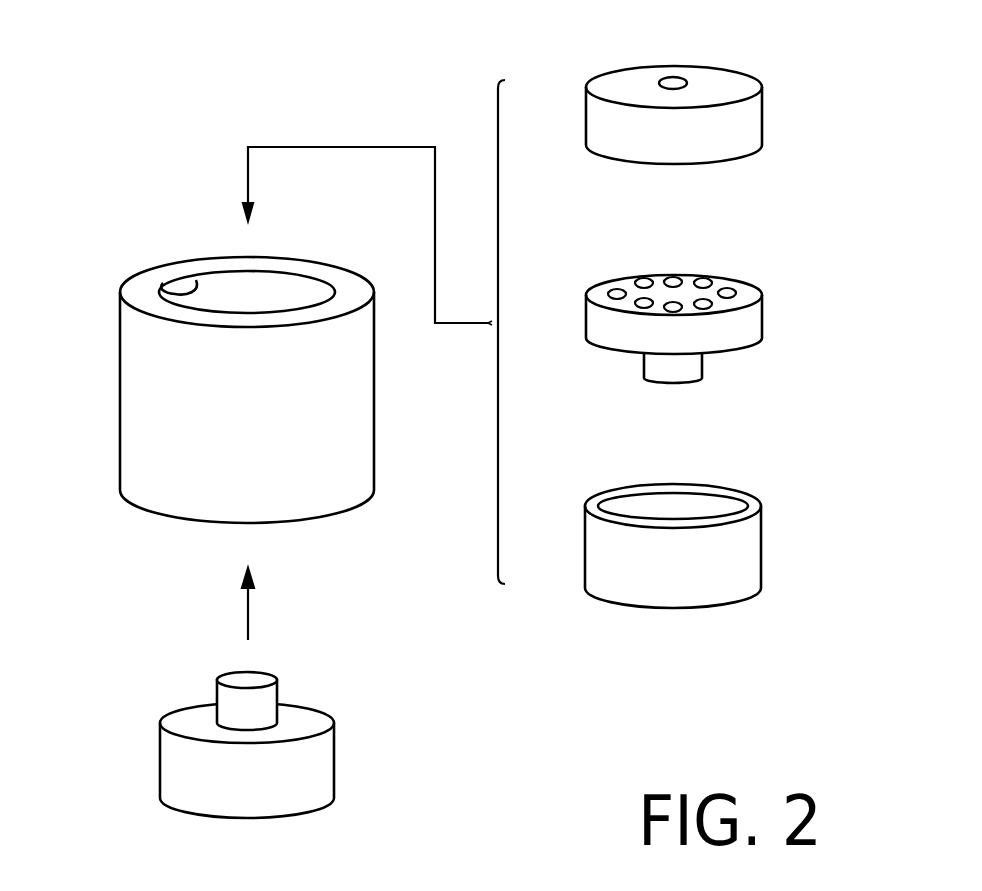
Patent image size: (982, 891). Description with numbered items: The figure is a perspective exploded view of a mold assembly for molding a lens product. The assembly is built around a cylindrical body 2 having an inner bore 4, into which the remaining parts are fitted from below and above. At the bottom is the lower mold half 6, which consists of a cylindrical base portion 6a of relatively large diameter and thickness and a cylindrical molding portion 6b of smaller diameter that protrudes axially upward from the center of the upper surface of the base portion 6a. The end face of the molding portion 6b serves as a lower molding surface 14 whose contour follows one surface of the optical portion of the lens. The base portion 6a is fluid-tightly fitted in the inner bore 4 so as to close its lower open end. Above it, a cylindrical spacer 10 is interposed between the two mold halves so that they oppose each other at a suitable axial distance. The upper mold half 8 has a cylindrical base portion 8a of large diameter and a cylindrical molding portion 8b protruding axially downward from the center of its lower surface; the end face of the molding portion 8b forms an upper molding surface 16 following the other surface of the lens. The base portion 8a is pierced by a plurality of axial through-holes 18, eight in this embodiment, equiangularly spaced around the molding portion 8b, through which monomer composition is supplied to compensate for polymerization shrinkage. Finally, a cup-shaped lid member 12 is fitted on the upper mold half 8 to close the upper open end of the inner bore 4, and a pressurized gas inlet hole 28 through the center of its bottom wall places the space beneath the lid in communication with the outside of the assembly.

The cylindrical body 2 is at (92, 366).
The inner bore 4 is at (191, 284).
The lower mold half 6 is at (294, 739).
The cylindrical base portion 6a is at (185, 772).
The cylindrical molding portion 6b is at (232, 697).
The upper mold half 8 is at (790, 316).
The cylindrical base portion 8a is at (596, 322).
The cylindrical molding portion 8b is at (695, 364).
The cylindrical spacer 10 is at (788, 543).
The lid member 12 is at (800, 104).
The lower molding surface 14 is at (260, 680).
The upper molding surface 16 is at (673, 382).
The axial through-holes 18 is at (672, 280).
The pressurized gas inlet hole 28 is at (673, 83).